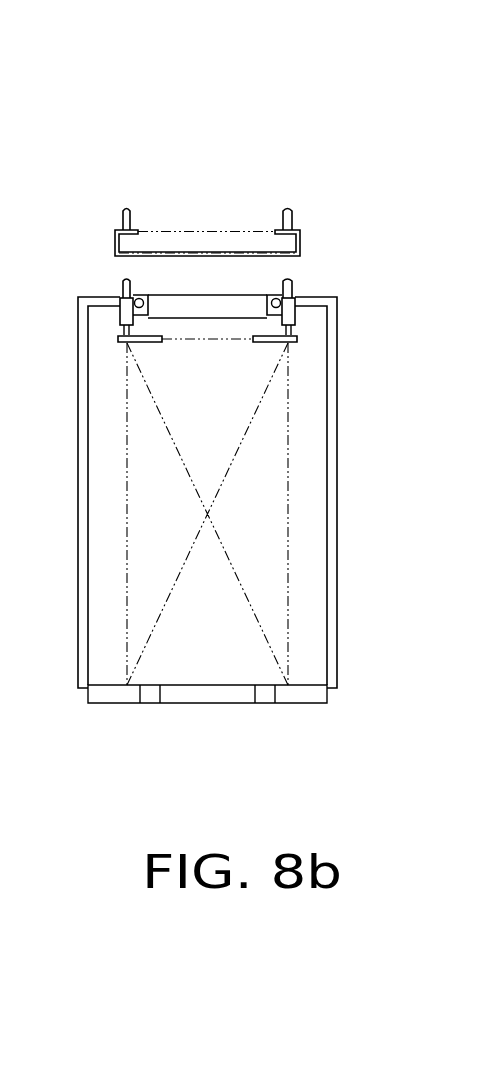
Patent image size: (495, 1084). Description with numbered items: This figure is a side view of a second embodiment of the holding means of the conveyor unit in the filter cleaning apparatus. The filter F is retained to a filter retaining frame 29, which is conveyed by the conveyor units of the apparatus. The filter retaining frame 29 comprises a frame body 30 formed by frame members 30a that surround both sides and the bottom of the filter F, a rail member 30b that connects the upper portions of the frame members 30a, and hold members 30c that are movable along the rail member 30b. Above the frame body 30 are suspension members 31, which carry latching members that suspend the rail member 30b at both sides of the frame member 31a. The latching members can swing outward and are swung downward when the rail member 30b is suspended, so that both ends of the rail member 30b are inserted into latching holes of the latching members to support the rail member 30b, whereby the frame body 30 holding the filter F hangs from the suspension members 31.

The filter retaining frame 29 is at (330, 156).
The frame body 30 is at (338, 455).
The frame member 30a is at (331, 625).
The rail member 30b is at (277, 300).
The hold member 30c is at (300, 338).
The suspension member 31 is at (278, 227).
The frame member 31a is at (117, 226).
The filter F is at (210, 660).